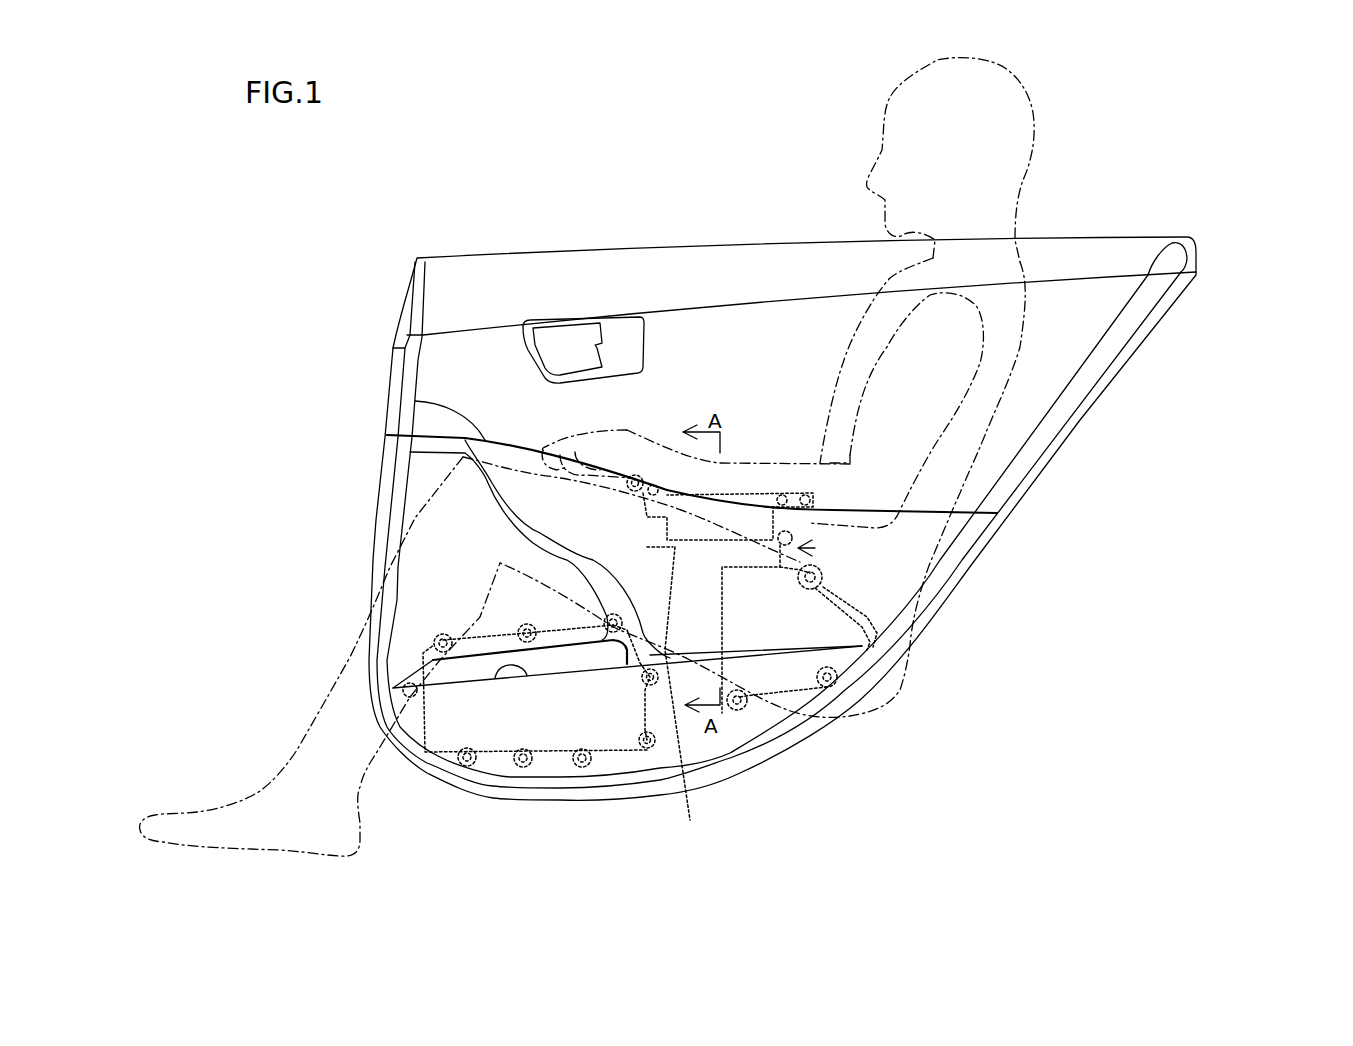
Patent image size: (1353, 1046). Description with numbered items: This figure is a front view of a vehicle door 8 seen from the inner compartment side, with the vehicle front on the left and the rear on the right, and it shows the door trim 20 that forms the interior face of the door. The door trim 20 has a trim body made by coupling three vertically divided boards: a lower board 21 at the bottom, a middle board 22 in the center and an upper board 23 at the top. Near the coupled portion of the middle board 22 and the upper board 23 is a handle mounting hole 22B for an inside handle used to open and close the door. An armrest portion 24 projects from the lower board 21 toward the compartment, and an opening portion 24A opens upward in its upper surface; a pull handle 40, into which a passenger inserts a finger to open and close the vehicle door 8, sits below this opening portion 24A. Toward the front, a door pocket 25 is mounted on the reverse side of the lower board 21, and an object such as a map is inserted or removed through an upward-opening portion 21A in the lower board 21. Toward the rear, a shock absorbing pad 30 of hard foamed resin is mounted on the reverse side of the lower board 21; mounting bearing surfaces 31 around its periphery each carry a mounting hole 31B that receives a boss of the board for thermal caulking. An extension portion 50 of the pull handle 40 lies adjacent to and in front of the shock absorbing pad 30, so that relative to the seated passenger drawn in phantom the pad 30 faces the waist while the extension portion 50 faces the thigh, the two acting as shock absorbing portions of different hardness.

The vehicle door 8 is at (475, 207).
The door trim 20 is at (1084, 470).
The lower board 21 is at (763, 718).
The opening portion 21A is at (495, 680).
The middle board 22 is at (1063, 345).
The handle mounting hole 22B is at (542, 345).
The upper board 23 is at (1112, 253).
The armrest portion 24 is at (415, 401).
The opening portion 24A is at (757, 505).
The door pocket 25 is at (610, 727).
The shock absorbing pad 30 is at (870, 680).
The mounting bearing surfaces 31 is at (830, 598).
The mounting hole 31B is at (897, 643).
The pull handle 40 is at (815, 548).
The extension portion 50 is at (690, 820).